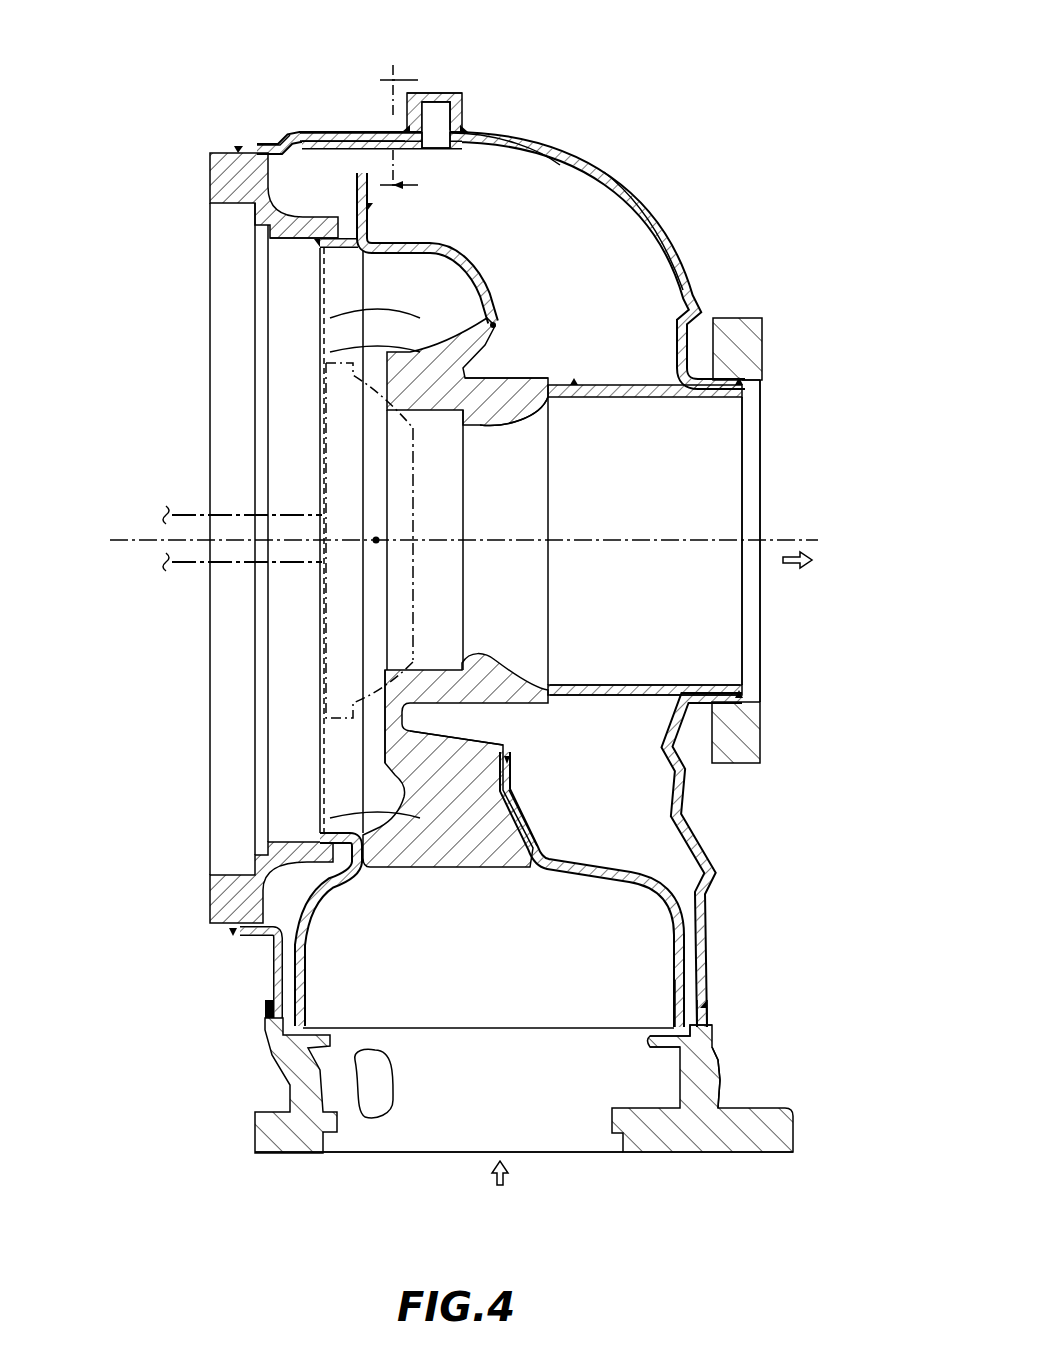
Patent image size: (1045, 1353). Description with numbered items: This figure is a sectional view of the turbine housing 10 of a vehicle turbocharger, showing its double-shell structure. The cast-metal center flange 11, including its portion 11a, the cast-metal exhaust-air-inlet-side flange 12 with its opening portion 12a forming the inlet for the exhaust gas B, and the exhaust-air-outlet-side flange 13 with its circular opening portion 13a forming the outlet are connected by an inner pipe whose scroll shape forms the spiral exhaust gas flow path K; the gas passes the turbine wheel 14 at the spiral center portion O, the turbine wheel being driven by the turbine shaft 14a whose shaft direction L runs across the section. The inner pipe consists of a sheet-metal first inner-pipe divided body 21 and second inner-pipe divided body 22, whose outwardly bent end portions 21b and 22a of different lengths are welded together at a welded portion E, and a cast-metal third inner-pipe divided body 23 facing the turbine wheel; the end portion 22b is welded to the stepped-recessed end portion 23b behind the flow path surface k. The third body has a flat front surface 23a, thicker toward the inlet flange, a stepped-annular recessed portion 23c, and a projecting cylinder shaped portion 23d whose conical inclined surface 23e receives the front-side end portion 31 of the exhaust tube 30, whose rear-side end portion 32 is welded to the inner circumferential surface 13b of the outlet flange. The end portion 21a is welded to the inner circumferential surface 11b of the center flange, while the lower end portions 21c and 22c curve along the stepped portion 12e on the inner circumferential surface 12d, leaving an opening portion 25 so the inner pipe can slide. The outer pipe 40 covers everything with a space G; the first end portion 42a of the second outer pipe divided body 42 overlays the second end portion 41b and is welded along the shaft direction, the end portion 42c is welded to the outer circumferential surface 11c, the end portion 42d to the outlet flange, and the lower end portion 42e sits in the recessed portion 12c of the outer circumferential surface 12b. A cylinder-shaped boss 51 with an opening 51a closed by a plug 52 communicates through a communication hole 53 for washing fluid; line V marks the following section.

The turbine housing 10 is at (575, 112).
The center flange 11 is at (209, 178).
The cylindrical portion of housing 11a is at (209, 735).
The inner circumferential surface 11b is at (266, 238).
The outer circumferential surface 11c is at (225, 153).
The exhaust-air-inlet-side flange 12 is at (703, 1155).
The opening portion 12a is at (415, 1153).
The outer circumferential surface 12b is at (722, 1065).
The recessed portion 12c is at (712, 1043).
The inner circumferential surface 12d is at (700, 1050).
The stepped portion 12e is at (655, 1050).
The exhaust-air-outlet-side flange 13 is at (765, 342).
The opening portion 13a is at (752, 475).
The inner circumferential surface 13b is at (755, 388).
The turbine wheel 14 is at (416, 500).
The turbine shaft 14a is at (240, 565).
The first inner-pipe divided body 21 is at (325, 900).
The front-circumferential-edge-side end portion 21a is at (318, 248).
The rear-circumferential-edge-side end portion 21b is at (357, 215).
The lower end portion 21c is at (273, 1000).
The second inner-pipe divided body 22 is at (472, 262).
The front-circumferential-edge-side end portion 22a is at (385, 240).
The rear-circumferential-edge-side end portion 22b is at (512, 790).
The lower end portion 22c is at (684, 985).
The third inner-pipe divided body 23 is at (478, 870).
The front surface 23a is at (383, 700).
The end portion 23b is at (510, 765).
The recessed portion 23c is at (410, 425).
The cylinder shaped portion 23d is at (520, 378).
The inclined surface 23e is at (520, 425).
The opening portion 25 is at (268, 1040).
The exhaust tube 30 is at (630, 700).
The front-side end portion 31 is at (556, 684).
The rear-side end portion 32 is at (708, 684).
The outer pipe 40 is at (340, 132).
The second end portion 41b is at (335, 136).
The second outer pipe divided body 42 is at (708, 895).
The first end portion 42a is at (385, 134).
The front-circumferential-edge-side end portion 42c is at (270, 146).
The rear-circumferential-edge side end portion 42d is at (735, 340).
The lower end portion 42e is at (708, 1010).
The cylinder-shaped boss 51 is at (470, 108).
The opening 51a is at (448, 96).
The plug 52 is at (443, 110).
The communication hole 53 is at (440, 150).
The welded portion E is at (712, 1003).
The space G is at (650, 255).
The exhaust gas flow path K is at (330, 318).
The flow path surface k is at (330, 818).
The shaft direction L is at (117, 538).
The spiral center portion O is at (376, 545).
The line V- V is at (412, 124).
The exhaust gas B is at (538, 1188).